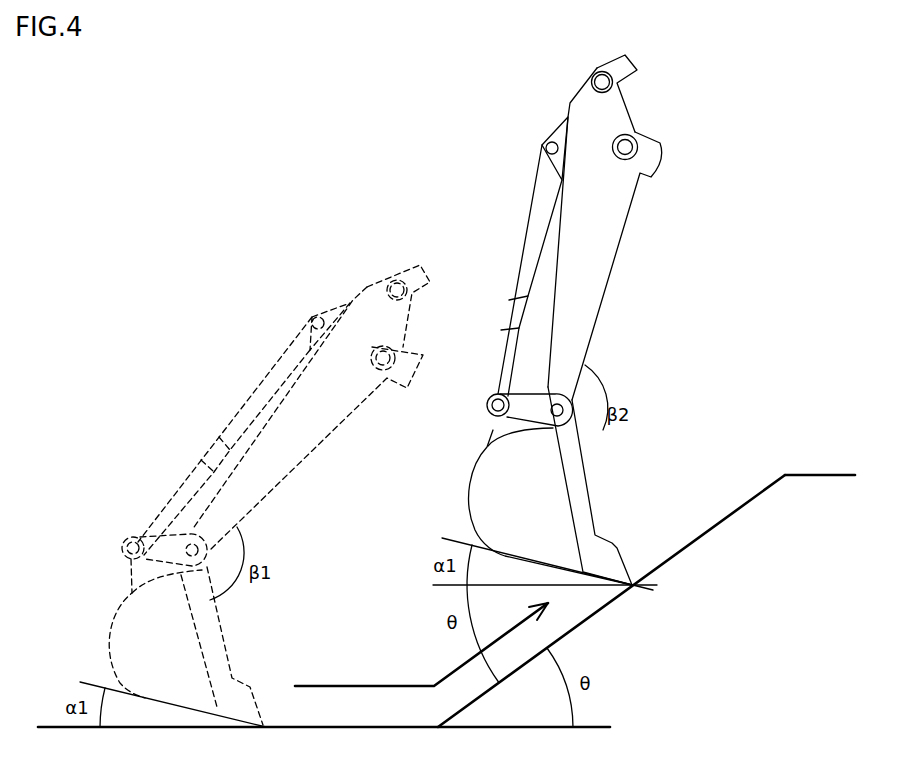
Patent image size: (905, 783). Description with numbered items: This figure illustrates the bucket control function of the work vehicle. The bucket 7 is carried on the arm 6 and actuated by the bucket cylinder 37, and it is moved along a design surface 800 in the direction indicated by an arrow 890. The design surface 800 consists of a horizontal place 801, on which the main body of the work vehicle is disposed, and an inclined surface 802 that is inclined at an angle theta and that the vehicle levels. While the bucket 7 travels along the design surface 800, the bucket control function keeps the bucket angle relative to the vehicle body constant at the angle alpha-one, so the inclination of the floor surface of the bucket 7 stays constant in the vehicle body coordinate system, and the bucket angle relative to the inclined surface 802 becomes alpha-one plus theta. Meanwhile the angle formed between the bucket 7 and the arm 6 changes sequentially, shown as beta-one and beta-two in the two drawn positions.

The arm 6 is at (585, 98).
The bucket cylinder 37 is at (535, 215).
The bucket 7 is at (485, 492).
The design surface 800 is at (711, 497).
The horizontal place 801 is at (810, 473).
The inclined surface 802 is at (670, 553).
The arrow 890 is at (365, 685).